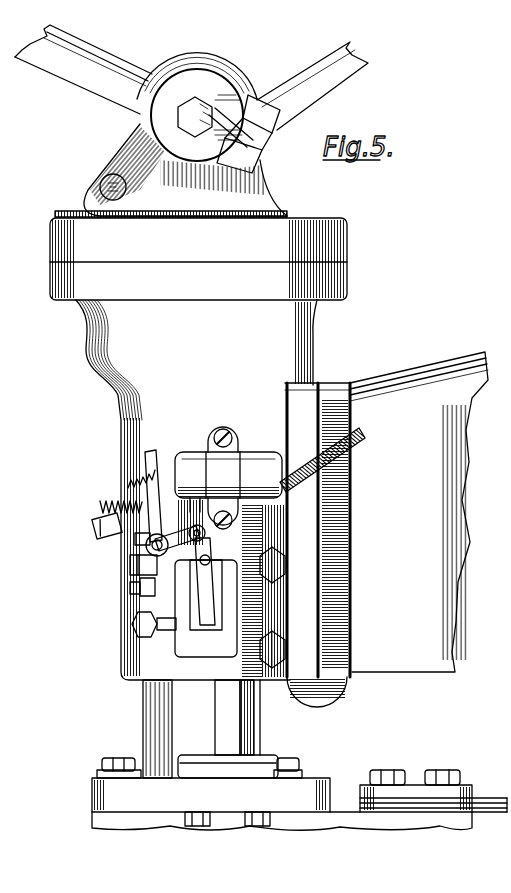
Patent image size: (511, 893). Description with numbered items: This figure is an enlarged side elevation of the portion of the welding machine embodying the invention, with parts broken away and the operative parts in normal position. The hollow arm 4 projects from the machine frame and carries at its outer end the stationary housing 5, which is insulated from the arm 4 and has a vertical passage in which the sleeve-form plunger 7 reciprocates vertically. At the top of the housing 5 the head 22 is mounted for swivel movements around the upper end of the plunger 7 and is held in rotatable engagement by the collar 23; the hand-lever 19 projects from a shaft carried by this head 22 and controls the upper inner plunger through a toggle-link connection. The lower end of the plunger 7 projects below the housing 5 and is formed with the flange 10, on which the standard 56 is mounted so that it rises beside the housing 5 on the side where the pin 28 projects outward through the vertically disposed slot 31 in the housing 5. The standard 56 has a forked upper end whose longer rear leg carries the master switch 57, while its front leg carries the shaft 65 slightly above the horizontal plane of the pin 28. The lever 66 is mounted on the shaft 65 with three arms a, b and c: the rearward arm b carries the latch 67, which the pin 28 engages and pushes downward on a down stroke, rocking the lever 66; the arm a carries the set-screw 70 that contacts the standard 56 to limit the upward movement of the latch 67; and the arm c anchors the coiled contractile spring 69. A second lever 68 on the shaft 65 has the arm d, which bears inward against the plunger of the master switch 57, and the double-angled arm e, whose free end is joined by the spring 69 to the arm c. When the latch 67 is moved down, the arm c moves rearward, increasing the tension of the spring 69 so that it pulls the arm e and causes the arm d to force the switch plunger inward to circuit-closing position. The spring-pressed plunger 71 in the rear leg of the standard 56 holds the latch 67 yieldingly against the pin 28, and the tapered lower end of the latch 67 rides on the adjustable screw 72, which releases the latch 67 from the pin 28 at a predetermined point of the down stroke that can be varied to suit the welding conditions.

The hand-lever 19 is at (76, 84).
The head 22 is at (276, 214).
The collar 23 is at (333, 246).
The housing 5 is at (102, 338).
The hollow arm 4 is at (443, 370).
The master switch 57 is at (253, 462).
The slot 31 is at (198, 513).
The arm d is at (153, 468).
The arm c is at (142, 490).
The coiled contractile spring 69 is at (116, 510).
The arm e is at (108, 535).
The lever 68 is at (141, 540).
The shaft 65 is at (148, 550).
The arm b is at (180, 535).
The lever 66 is at (153, 570).
The arm a is at (140, 583).
The set-screw 70 is at (140, 596).
The pin 28 is at (163, 593).
The latch 67 is at (205, 613).
The spring-pressed plunger 71 is at (237, 558).
The adjustable screw 72 is at (178, 628).
The standard 56 is at (232, 705).
The plunger 7 is at (168, 735).
The flange 10 is at (307, 787).